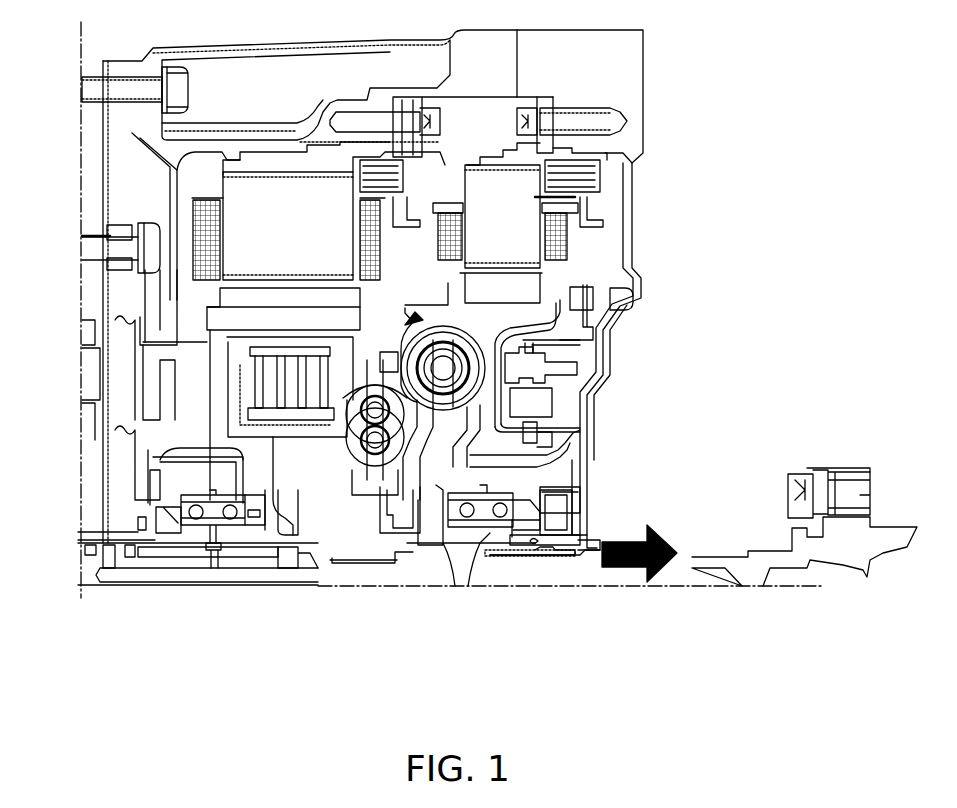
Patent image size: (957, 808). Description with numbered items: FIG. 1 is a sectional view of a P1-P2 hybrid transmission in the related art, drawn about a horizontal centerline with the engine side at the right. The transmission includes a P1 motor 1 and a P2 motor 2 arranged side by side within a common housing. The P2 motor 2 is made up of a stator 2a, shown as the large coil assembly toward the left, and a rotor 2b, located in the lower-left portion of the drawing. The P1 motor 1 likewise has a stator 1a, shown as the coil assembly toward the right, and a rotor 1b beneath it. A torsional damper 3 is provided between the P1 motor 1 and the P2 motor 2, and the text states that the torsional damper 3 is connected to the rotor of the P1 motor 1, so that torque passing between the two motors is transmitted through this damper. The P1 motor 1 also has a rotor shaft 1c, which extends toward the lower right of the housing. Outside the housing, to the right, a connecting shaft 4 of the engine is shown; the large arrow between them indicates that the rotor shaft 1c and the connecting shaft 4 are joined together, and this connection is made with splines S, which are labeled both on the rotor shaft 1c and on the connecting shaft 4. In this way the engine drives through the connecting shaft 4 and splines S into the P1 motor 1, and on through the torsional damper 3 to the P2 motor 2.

The P1 motor 1 is at (560, 192).
The stator 1a is at (520, 243).
The rotor 1b is at (483, 403).
The rotor shaft 1c is at (547, 540).
The P2 motor 2 is at (209, 169).
The stator 2a is at (245, 215).
The rotor 2b is at (220, 405).
The torsional damper 3 is at (497, 344).
The connecting shaft 4 is at (713, 560).
The splines S is at (517, 553).